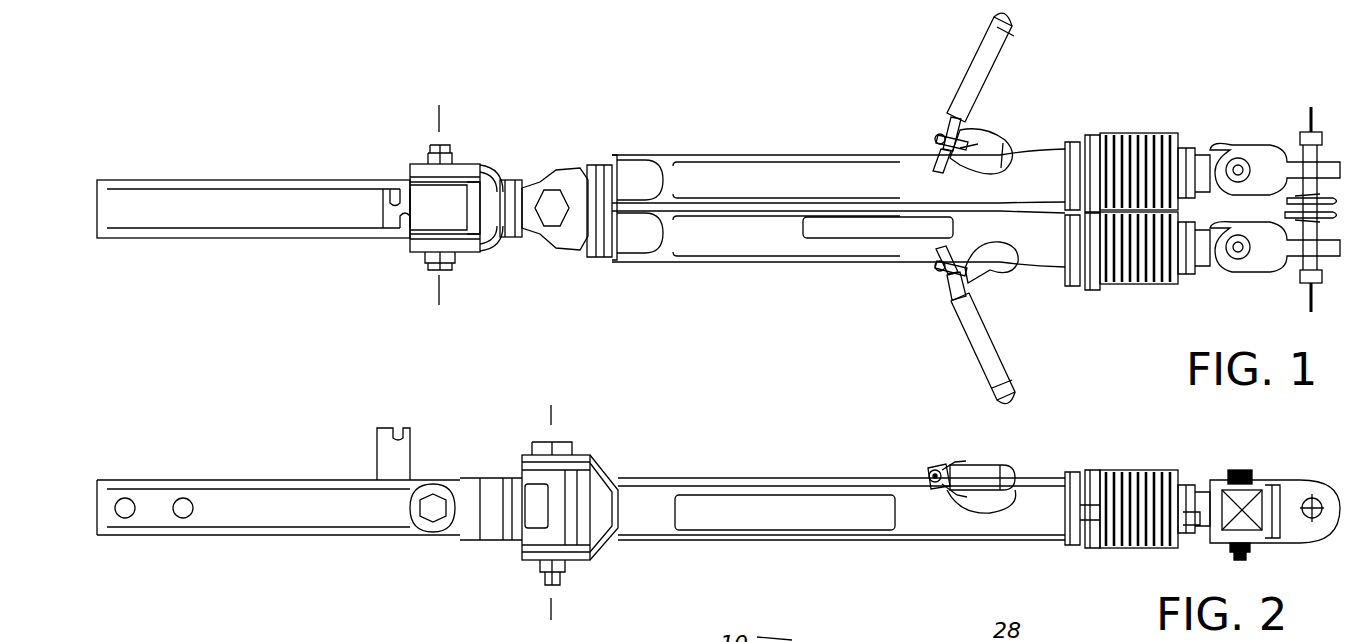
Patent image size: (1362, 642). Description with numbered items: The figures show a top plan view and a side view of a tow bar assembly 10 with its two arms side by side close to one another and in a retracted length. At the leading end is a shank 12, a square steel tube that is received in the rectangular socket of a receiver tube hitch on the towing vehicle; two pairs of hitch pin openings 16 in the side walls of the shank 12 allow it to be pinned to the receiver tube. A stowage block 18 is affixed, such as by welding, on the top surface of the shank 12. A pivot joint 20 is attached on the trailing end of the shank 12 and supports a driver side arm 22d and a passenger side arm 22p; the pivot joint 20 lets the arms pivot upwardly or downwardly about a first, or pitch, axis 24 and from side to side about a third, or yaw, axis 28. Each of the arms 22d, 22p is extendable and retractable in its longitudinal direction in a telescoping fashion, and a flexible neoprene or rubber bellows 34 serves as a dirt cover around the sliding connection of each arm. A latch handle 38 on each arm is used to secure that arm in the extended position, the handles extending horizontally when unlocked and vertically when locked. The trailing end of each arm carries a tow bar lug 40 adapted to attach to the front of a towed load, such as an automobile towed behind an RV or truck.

In FIG. 1, the tow bar assembly 10 is at (396, 66).
In FIG. 2, the tow bar assembly 10 is at (272, 402).
In FIG. 1, the shank 12 is at (165, 188).
In FIG. 2, the shank 12 is at (150, 486).
In FIG. 2, the hitch pin openings 16 is at (128, 518).
In FIG. 1, the stowage block 18 is at (392, 215).
In FIG. 2, the stowage block 18 is at (382, 458).
In FIG. 1, the pivot joint 20 is at (508, 136).
In FIG. 2, the pivot joint 20 is at (528, 422).
In FIG. 1, the passenger side arm 22p is at (738, 178).
In FIG. 1, the driver side arm 22d is at (738, 245).
In FIG. 2, the driver side arm 22d is at (930, 522).
In FIG. 1, the first axis 24 is at (442, 290).
In FIG. 2, the third axis 28 is at (553, 418).
In FIG. 1, the bellows 34 is at (1140, 138).
In FIG. 2, the bellows 34 is at (1120, 470).
In FIG. 1, the latch handle 38 is at (1000, 42).
In FIG. 2, the latch handle 38 is at (995, 478).
In FIG. 1, the tow bar lug 40 is at (1262, 138).
In FIG. 2, the tow bar lug 40 is at (1257, 478).